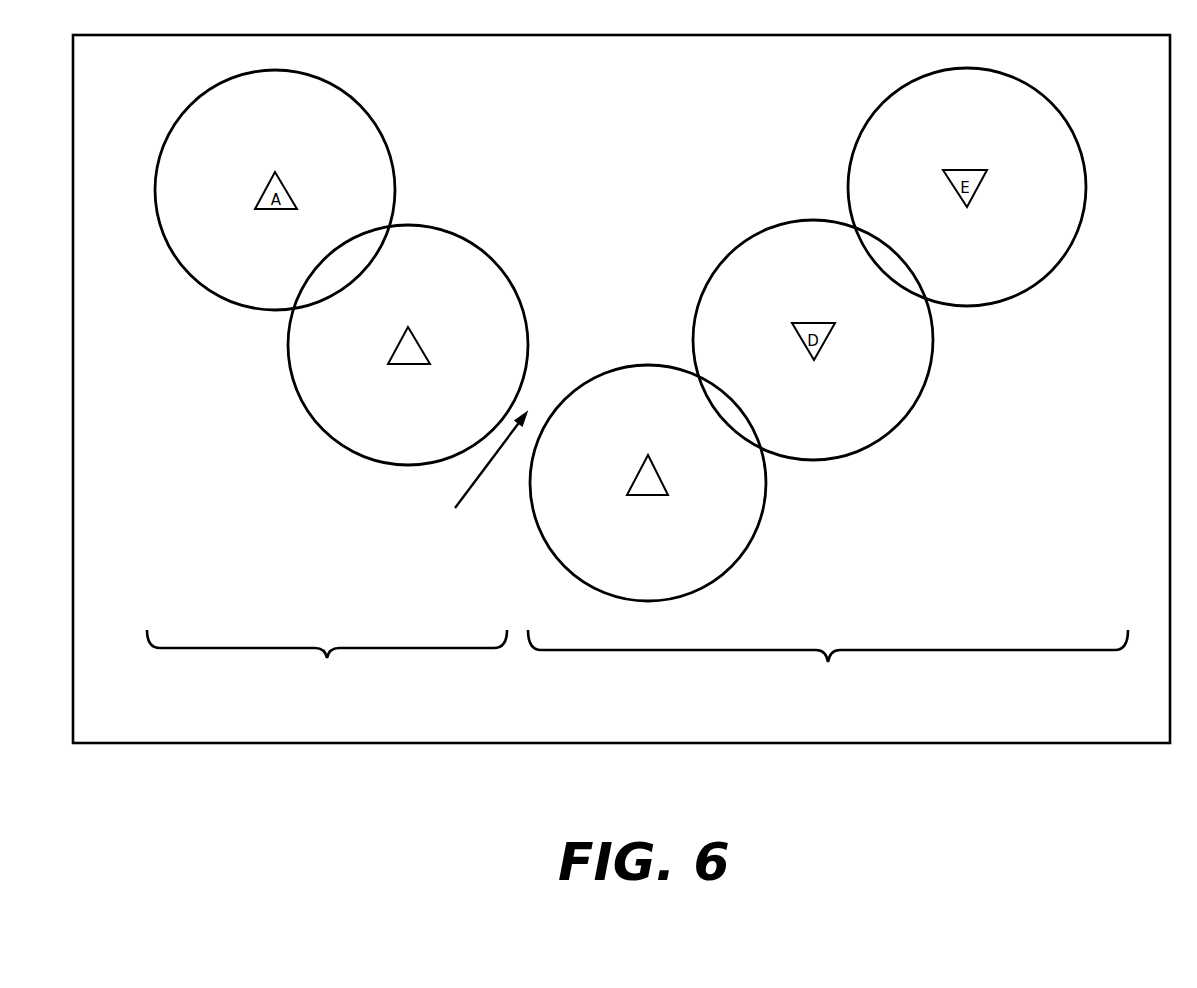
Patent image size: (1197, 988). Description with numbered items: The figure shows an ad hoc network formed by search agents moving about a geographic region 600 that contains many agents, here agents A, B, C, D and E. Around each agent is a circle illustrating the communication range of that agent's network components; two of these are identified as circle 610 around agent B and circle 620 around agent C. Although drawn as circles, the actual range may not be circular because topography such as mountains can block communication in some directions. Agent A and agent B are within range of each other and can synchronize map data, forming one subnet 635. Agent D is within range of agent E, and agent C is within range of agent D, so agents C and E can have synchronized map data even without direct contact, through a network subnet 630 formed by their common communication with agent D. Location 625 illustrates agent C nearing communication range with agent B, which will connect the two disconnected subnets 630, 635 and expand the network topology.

The geographic region 600 is at (621, 374).
The circle 610 is at (503, 267).
The circle 620 is at (650, 364).
The location 625 is at (476, 475).
The network subnet 630 is at (828, 665).
The subnet 635 is at (327, 664).